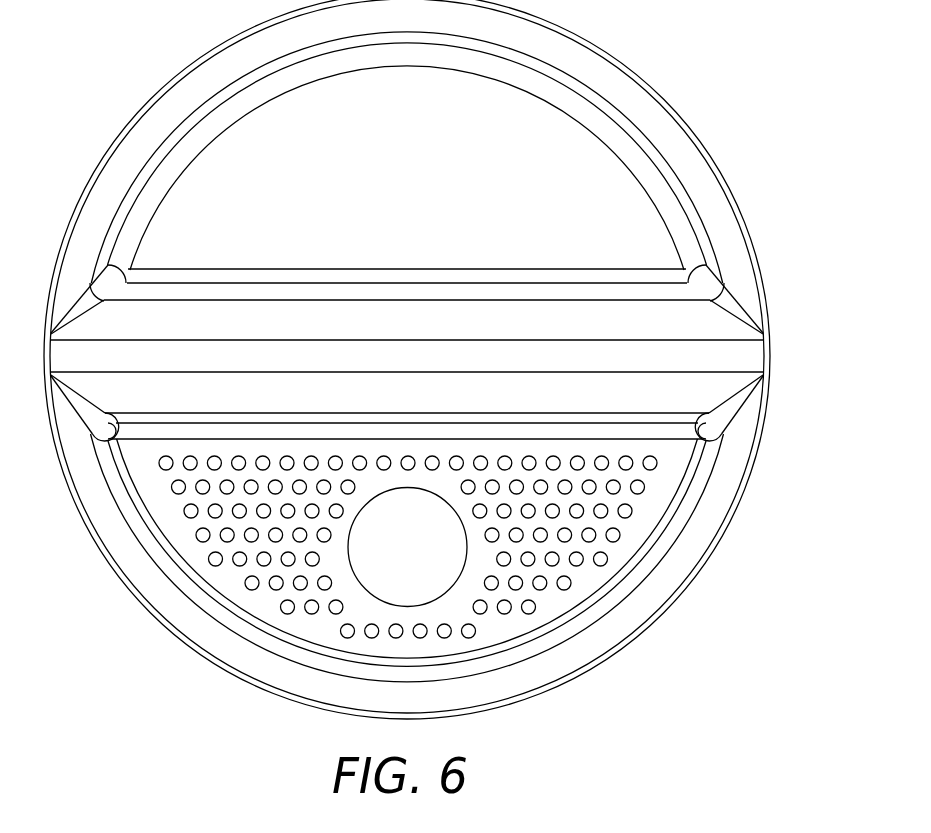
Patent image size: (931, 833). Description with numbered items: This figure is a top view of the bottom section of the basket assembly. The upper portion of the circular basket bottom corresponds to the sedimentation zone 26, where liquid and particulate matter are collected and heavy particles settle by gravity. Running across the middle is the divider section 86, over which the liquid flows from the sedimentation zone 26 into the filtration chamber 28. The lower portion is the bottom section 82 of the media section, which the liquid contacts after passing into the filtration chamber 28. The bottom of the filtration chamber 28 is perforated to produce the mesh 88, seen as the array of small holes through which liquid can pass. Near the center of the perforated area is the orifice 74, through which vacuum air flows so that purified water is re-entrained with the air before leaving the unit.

The sedimentation zone 26 is at (548, 234).
The filtration chamber 28 is at (562, 548).
The orifice 74 is at (420, 559).
The bottom section of the media section 82 is at (313, 586).
The divider section 86 is at (747, 357).
The mesh 88 is at (196, 538).